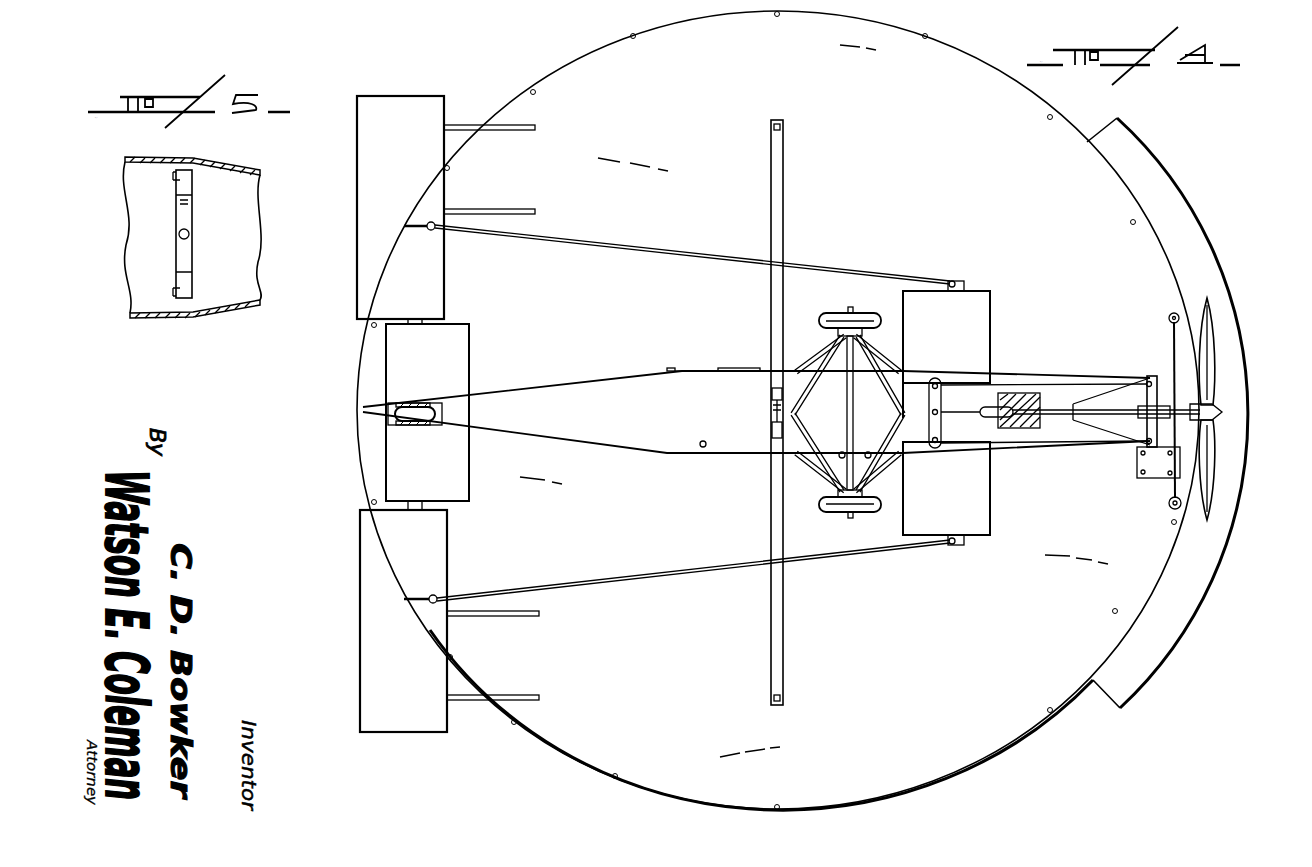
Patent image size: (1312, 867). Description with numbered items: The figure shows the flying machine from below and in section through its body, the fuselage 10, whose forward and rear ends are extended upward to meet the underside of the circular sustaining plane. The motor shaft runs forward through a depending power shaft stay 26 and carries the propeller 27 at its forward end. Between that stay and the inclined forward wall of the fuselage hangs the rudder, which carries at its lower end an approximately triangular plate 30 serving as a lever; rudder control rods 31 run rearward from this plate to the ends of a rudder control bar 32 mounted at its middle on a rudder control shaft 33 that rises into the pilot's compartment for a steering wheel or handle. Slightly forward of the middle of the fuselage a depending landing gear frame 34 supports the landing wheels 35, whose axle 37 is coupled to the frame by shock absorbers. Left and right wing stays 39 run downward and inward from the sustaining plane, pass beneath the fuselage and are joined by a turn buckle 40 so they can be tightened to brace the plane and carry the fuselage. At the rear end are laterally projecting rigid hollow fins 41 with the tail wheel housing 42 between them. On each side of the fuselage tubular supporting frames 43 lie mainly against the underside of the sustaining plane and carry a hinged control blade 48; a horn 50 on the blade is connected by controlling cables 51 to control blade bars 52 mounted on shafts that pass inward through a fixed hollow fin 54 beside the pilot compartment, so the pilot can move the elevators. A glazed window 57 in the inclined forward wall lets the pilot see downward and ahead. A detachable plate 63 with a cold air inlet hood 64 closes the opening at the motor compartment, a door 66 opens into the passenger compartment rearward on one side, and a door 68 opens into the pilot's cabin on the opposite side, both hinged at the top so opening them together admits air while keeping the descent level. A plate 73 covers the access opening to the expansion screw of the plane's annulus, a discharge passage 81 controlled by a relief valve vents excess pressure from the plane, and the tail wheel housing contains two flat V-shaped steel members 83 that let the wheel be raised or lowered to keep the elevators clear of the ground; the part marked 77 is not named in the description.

In FIG. 4, the fuselage 10 is at (594, 383).
In FIG. 5, the fuselage 10 is at (128, 257).
In FIG. 4, the power shaft stay 26 is at (1205, 416).
In FIG. 4, the propeller 27 is at (1213, 372).
In FIG. 4, the triangular plate 30 is at (1115, 395).
In FIG. 4, the rudder control rods 31 is at (1052, 445).
In FIG. 4, the rudder control bar 32 is at (933, 445).
In FIG. 4, the rudder control shaft 33 is at (950, 409).
In FIG. 5, the rudder control shaft 33 is at (190, 236).
In FIG. 4, the landing gear frame 34 is at (812, 476).
In FIG. 4, the landing wheels 35 is at (838, 512).
In FIG. 4, the axle 37 is at (847, 418).
In FIG. 4, the wing stays 39 is at (771, 539).
In FIG. 4, the turn buckle 40 is at (771, 412).
In FIG. 4, the rigid hollow fins 41 is at (470, 484).
In FIG. 4, the tail wheel housing 42 is at (445, 414).
In FIG. 4, the supporting frames 43 is at (510, 695).
In FIG. 4, the control blade 48 is at (360, 686).
In FIG. 4, the horn 50 is at (403, 599).
In FIG. 4, the controlling cables 51 is at (648, 577).
In FIG. 4, the control blade bars 52 is at (962, 546).
In FIG. 4, the hollow fin 54 is at (990, 506).
In FIG. 4, the window 57 is at (1025, 393).
In FIG. 4, the plate 63 is at (748, 357).
In FIG. 4, the cold air inlet hood 64 is at (842, 452).
In FIG. 4, the door 66 is at (686, 366).
In FIG. 4, the door 68 is at (868, 452).
In FIG. 4, the plate 73 is at (1150, 470).
In FIG. 4, the outer frame arc 77 is at (1207, 240).
In FIG. 4, the discharge passage 81 is at (702, 448).
In FIG. 4, the V-shaped steel members 83 is at (428, 401).